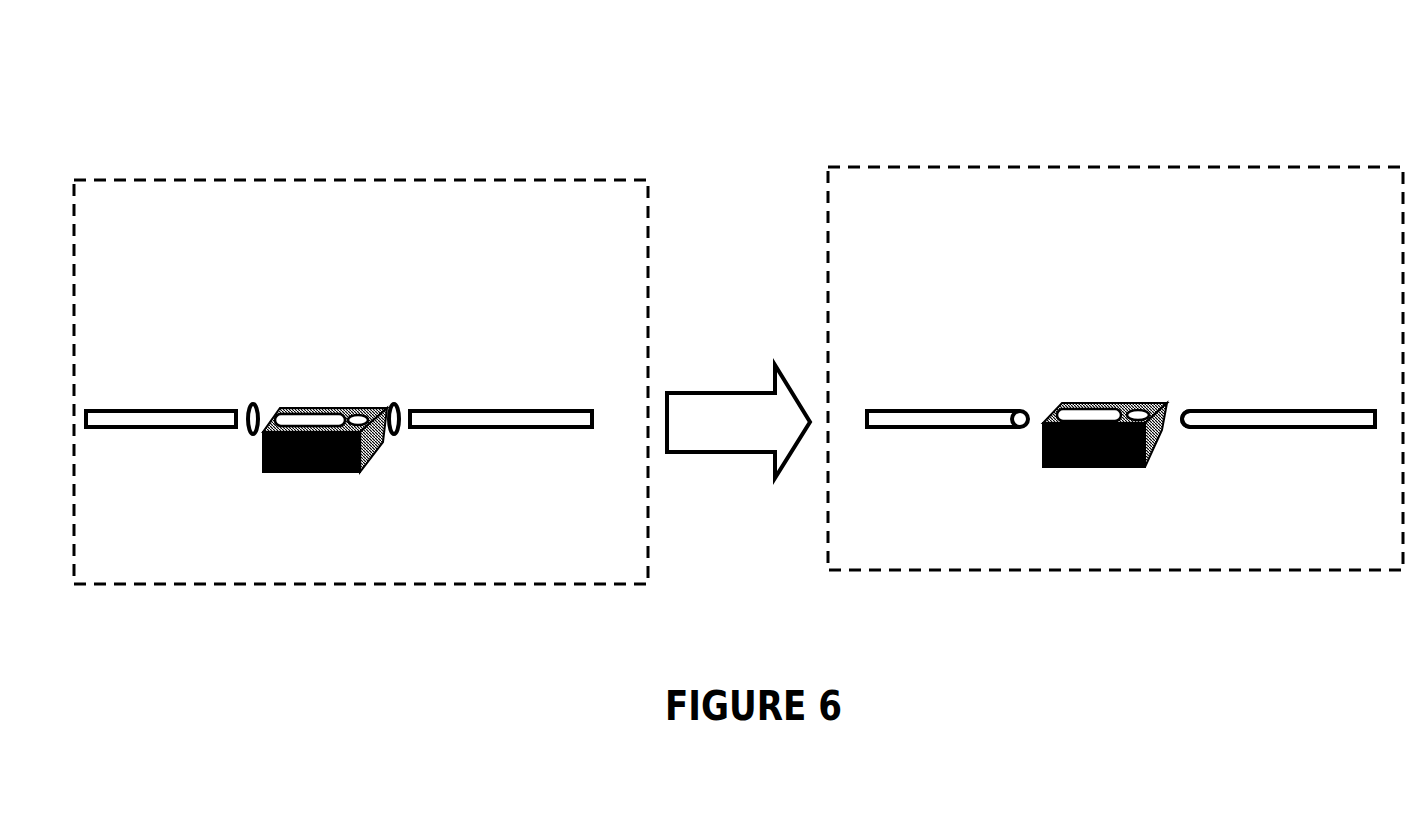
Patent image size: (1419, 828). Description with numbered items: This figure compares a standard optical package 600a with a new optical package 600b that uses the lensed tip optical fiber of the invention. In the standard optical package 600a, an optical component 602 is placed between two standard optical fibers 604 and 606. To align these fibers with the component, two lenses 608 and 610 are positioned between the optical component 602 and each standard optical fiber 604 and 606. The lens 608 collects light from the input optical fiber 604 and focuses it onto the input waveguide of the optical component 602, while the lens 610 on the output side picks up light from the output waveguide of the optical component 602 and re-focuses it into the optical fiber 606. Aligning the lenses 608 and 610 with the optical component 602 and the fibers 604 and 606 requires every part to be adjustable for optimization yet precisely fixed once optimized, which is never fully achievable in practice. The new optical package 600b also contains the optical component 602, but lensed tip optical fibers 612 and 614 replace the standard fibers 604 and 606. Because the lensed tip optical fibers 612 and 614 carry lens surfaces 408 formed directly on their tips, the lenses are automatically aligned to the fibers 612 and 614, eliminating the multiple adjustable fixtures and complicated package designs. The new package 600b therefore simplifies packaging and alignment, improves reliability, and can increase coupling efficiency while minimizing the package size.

The standard optical package 600a is at (636, 158).
The new optical package 600b is at (1361, 153).
The optical component 602 is at (346, 396).
The standard optical fiber 604 is at (160, 408).
The standard optical fiber 606 is at (500, 408).
The lens 608 is at (250, 448).
The lens 610 is at (393, 448).
The lensed tip optical fiber 612 is at (912, 408).
The lensed tip optical fiber 614 is at (1256, 408).
The lens surface 408 is at (1182, 430).